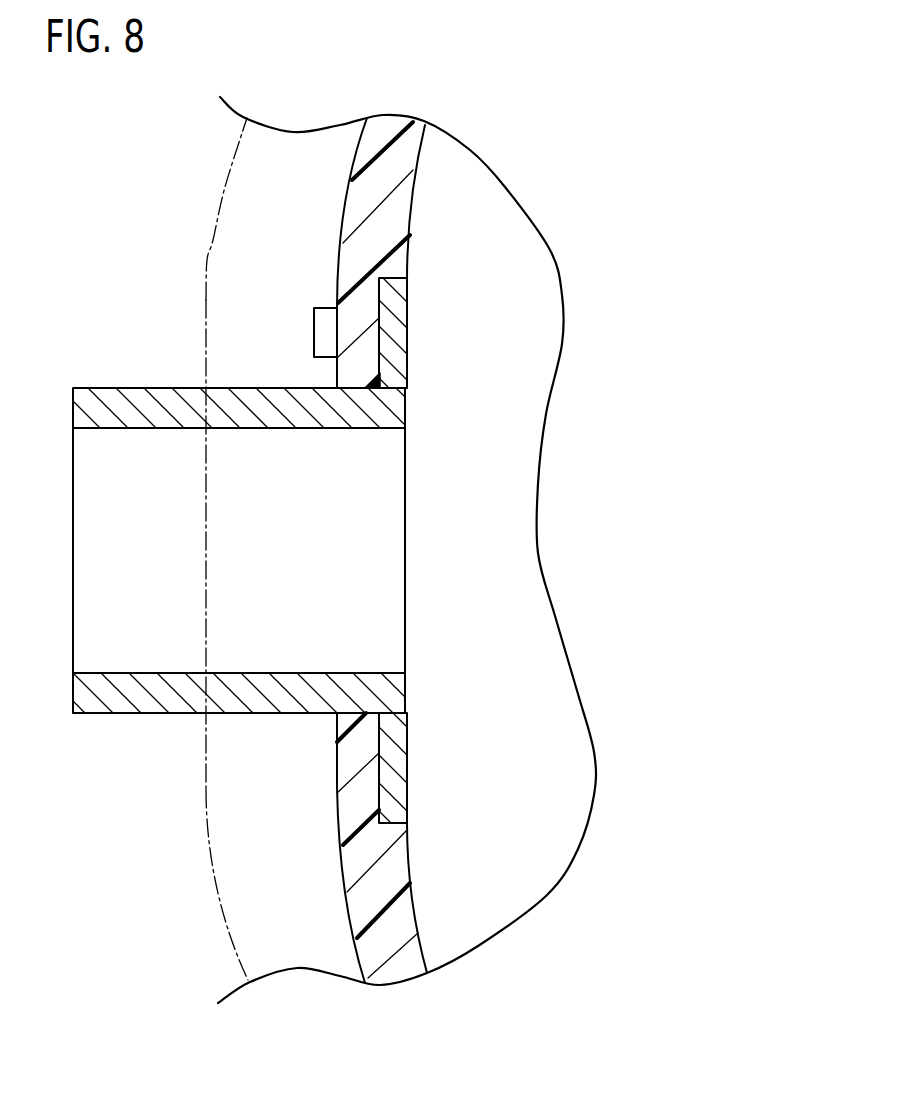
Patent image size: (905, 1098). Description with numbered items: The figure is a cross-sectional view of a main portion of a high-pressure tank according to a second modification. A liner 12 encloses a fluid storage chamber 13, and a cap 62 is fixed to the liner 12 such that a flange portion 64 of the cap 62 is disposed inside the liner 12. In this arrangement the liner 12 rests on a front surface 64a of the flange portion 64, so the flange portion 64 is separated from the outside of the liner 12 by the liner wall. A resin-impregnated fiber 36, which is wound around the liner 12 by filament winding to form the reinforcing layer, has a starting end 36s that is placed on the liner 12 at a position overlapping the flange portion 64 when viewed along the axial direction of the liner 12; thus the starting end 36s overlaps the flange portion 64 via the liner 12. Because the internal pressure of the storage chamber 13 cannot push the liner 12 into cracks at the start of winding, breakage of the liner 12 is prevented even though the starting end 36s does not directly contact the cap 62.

The liner 12 is at (413, 216).
The fluid storage chamber 13 is at (445, 888).
The fiber 36 is at (313, 314).
The starting end 36s is at (327, 343).
The cap 62 is at (135, 386).
The flange portion 64 is at (395, 329).
The front surface 64a is at (379, 290).